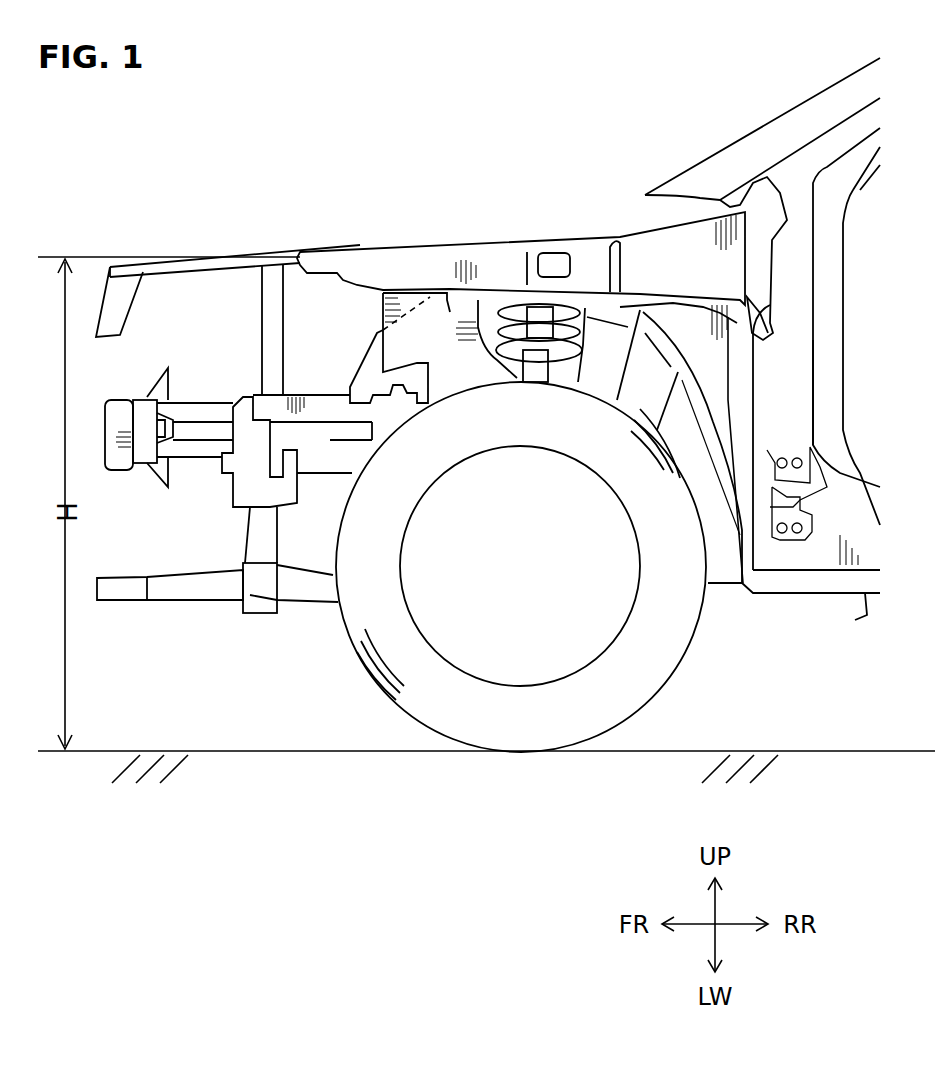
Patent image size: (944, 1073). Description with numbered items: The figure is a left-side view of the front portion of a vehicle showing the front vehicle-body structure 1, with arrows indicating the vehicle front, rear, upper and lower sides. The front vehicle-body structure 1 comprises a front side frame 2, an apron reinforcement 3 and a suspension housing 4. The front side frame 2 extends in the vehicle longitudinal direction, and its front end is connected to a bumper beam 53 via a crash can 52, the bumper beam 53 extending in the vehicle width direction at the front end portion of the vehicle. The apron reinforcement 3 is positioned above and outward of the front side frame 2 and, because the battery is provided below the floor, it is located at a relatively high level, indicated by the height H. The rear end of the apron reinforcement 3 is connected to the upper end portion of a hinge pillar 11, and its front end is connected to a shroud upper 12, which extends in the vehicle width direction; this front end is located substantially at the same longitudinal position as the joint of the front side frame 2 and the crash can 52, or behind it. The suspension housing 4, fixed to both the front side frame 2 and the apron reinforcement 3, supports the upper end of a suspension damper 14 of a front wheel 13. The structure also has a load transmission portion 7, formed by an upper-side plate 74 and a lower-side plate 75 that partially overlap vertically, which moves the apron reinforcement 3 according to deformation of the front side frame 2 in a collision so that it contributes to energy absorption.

The front vehicle-body structure 1 is at (275, 118).
The front side frame 2 is at (318, 392).
The apron reinforcement 3 is at (520, 250).
The suspension housing 4 is at (583, 313).
The load transmission portion 7 is at (414, 265).
The hinge pillar 11 is at (813, 323).
The shroud upper 12 is at (147, 265).
The front wheel 13 is at (665, 690).
The suspension damper 14 is at (537, 365).
The crash can 52 is at (203, 402).
The bumper beam 53 is at (130, 470).
The upper-side plate 74 is at (410, 313).
The lower-side plate 75 is at (448, 307).